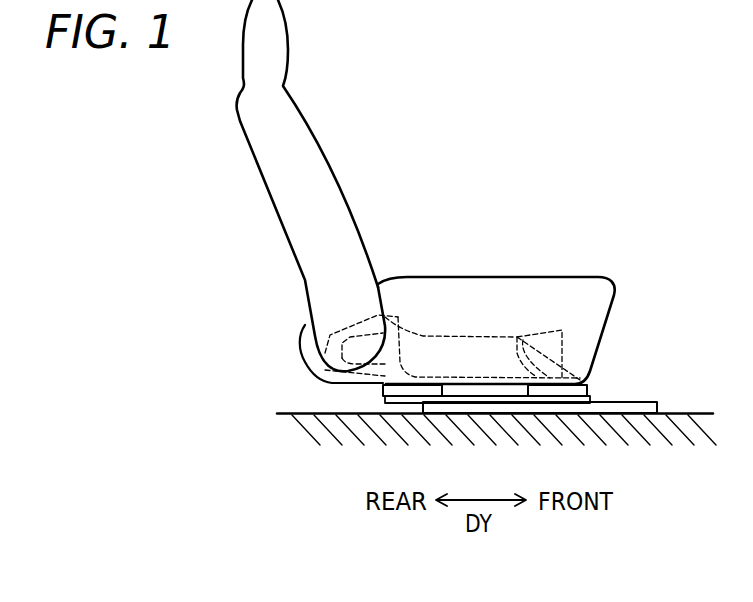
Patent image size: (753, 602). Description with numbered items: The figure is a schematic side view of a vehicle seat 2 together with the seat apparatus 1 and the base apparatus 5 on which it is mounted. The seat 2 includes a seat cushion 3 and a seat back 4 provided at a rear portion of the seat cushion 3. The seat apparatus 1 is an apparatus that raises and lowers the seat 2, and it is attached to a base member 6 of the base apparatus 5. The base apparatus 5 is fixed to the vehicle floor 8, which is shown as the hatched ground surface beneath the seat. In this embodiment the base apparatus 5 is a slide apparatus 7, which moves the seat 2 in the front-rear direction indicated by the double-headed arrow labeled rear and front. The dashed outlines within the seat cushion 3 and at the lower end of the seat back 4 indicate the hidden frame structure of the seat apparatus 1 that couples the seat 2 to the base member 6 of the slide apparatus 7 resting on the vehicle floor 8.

The seat apparatus 1 is at (611, 366).
The seat 2 is at (468, 141).
The seat cushion 3 is at (570, 277).
The seat back 4 is at (333, 166).
The base apparatus 5 is at (613, 394).
The base member 6 is at (380, 403).
The slide apparatus 7 is at (562, 387).
The vehicle floor 8 is at (703, 413).